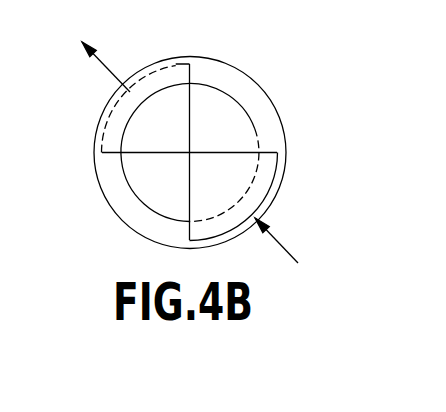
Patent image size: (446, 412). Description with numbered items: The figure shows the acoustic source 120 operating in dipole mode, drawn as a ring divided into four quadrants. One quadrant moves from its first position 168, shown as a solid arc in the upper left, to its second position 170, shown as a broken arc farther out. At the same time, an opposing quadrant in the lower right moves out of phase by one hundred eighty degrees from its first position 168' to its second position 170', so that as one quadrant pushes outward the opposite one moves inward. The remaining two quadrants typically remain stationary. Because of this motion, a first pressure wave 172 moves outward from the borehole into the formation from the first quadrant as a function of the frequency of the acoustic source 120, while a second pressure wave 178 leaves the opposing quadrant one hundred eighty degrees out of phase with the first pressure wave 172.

The acoustic source 120 is at (250, 97).
The position 1 of first quadrant 168 is at (188, 121).
The position 2 of first quadrant 170 is at (139, 76).
The position 1 of opposing quadrant 168' is at (266, 197).
The position 2 of opposing quadrant 170' is at (279, 175).
The first pressure wave 172 is at (110, 70).
The second pressure wave 178 is at (287, 249).